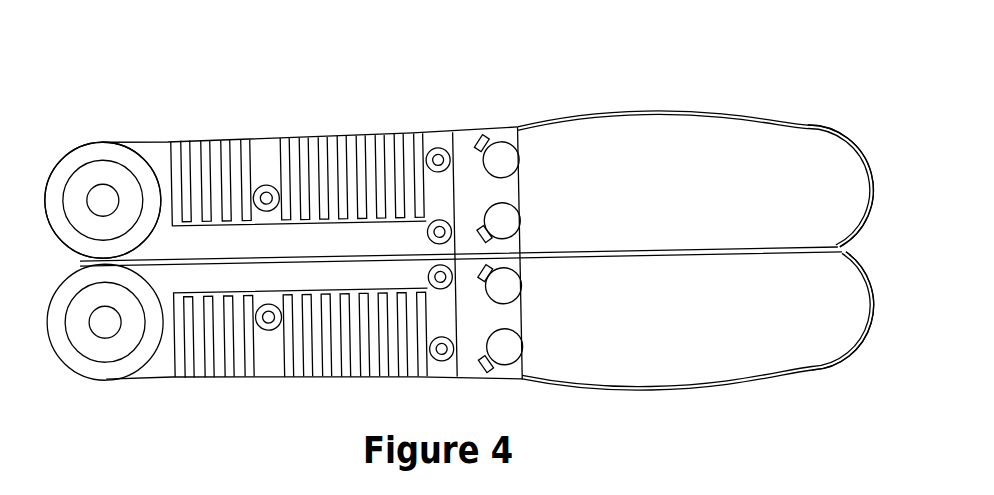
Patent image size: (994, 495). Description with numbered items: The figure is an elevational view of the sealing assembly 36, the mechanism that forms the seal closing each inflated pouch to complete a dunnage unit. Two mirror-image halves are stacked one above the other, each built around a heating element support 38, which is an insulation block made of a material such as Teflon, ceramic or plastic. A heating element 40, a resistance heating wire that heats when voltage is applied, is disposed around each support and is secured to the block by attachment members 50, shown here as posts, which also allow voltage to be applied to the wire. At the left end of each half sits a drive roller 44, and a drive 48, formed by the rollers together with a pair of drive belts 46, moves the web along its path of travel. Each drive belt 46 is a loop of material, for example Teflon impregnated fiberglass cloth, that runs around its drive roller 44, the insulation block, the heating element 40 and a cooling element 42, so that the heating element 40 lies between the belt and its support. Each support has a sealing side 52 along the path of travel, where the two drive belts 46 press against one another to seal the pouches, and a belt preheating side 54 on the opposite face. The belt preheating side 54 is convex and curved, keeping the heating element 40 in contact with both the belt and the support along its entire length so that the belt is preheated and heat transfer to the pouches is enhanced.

The sealing assembly 36 is at (228, 55).
The heating element support 38 is at (807, 187).
The heating element 40 is at (874, 290).
The cooling element 42 is at (263, 162).
The drive roller 44 is at (58, 215).
The drive belt 46 is at (470, 130).
The drive 48 is at (130, 106).
The attachment member 50 is at (502, 155).
The sealing side 52 is at (643, 250).
The belt preheating side 54 is at (708, 115).